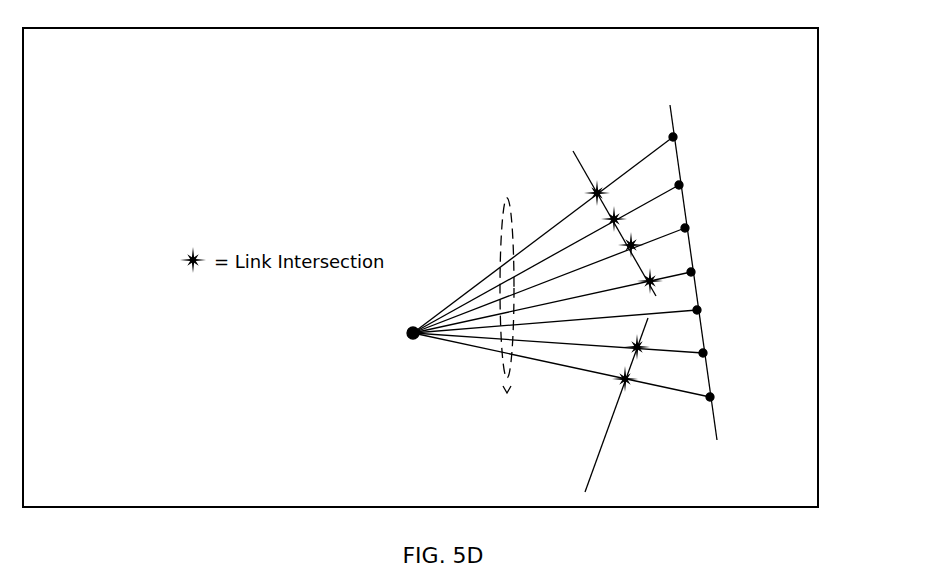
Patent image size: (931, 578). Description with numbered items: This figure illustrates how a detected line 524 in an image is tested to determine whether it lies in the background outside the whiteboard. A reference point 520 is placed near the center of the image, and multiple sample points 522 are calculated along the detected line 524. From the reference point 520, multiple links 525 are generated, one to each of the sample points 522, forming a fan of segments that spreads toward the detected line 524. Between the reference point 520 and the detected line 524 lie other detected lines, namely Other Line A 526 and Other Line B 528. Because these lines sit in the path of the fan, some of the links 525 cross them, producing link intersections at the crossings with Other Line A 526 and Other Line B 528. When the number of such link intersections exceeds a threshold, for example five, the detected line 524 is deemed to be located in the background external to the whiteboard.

The reference point 520 is at (404, 346).
The sample points 522 is at (706, 223).
The detected line 524 is at (722, 428).
The links 525 is at (497, 224).
The Other Line A 526 is at (571, 146).
The Other Line B 528 is at (565, 405).